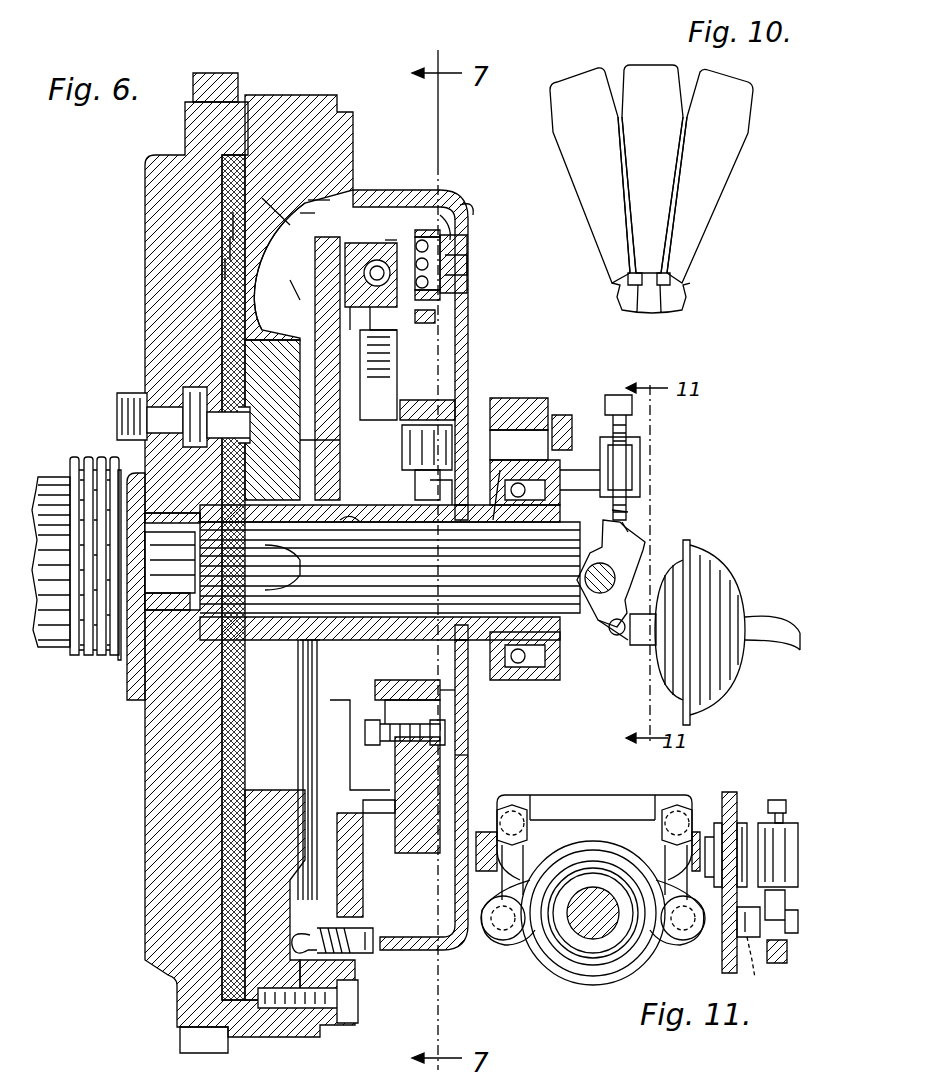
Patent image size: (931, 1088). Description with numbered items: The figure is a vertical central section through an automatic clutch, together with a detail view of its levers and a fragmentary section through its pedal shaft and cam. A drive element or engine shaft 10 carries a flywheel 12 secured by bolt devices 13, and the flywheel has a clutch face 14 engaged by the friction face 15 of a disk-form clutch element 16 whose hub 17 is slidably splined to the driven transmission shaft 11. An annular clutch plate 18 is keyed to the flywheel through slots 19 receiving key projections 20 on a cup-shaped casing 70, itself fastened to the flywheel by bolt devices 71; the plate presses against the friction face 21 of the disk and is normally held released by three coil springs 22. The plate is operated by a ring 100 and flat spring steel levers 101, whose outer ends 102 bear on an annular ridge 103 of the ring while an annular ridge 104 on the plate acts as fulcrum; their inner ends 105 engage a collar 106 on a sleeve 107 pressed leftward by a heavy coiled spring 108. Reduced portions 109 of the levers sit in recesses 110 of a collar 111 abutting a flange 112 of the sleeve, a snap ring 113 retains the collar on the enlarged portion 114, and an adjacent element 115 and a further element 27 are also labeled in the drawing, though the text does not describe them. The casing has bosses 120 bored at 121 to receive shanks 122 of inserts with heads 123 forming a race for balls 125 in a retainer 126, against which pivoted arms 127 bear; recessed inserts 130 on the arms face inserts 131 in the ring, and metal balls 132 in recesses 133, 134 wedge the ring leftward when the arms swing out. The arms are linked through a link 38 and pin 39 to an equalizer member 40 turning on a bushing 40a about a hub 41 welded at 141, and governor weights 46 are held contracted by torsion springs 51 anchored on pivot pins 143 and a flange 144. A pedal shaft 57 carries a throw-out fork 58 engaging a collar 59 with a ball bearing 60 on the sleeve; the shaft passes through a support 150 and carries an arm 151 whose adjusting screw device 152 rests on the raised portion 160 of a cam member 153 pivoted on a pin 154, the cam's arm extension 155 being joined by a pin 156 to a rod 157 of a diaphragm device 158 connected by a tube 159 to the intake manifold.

In FIG. 6, the drive element or engine shaft 10 is at (58, 640).
In FIG. 6, the driven element or transmission shaft 11 is at (390, 567).
In FIG. 11, the driven element or transmission shaft 11 is at (585, 923).
In FIG. 6, the flywheel 12 is at (160, 298).
In FIG. 6, the bolt devices 13 is at (160, 410).
In FIG. 6, the clutch face 14 is at (228, 258).
In FIG. 6, the friction face 15 is at (230, 237).
In FIG. 6, the clutch element 16 is at (233, 212).
In FIG. 6, the hub 17 is at (190, 640).
In FIG. 6, the clutch element 18 is at (262, 198).
In FIG. 6, the slots 19 is at (292, 165).
In FIG. 6, the key projections 20 is at (308, 200).
In FIG. 6, the friction face 21 is at (247, 313).
In FIG. 6, the coil springs 22 is at (353, 947).
In FIG. 6, the pressure plate 27 is at (447, 720).
In FIG. 6, the link 38 is at (422, 363).
In FIG. 6, the pin 39 is at (495, 520).
In FIG. 6, the equalizer member 40 is at (472, 500).
In FIG. 6, the bushing 40a is at (398, 717).
In FIG. 6, the hub 41 is at (400, 707).
In FIG. 6, the governor weights 46 is at (457, 760).
In FIG. 6, the coiled torsion spring 51 is at (378, 748).
In FIG. 6, the clutch pedal shaft 57 is at (545, 453).
In FIG. 11, the clutch pedal shaft 57 is at (485, 835).
In FIG. 6, the throw-out fork 58 is at (538, 397).
In FIG. 11, the throw-out fork 58 is at (590, 805).
In FIG. 6, the collar or ring 59 is at (525, 677).
In FIG. 11, the collar or ring 59 is at (652, 950).
In FIG. 6, the ball bearing journal mounting 60 is at (503, 660).
In FIG. 11, the ball bearing journal mounting 60 is at (592, 968).
In FIG. 6, the cup-shaped casing 70 is at (458, 213).
In FIG. 6, the bolt devices 71 is at (353, 1000).
In FIG. 6, the ring 100 is at (352, 240).
In FIG. 6, the fingers or levers 101 is at (387, 343).
In FIG. 10, the fingers or levers 101 is at (698, 170).
In FIG. 6, the outer ends 102 is at (397, 382).
In FIG. 10, the outer ends 102 is at (552, 95).
In FIG. 6, the annular ridge 103 is at (370, 243).
In FIG. 6, the annular ridge 104 is at (290, 280).
In FIG. 6, the inner ends 105 is at (305, 735).
In FIG. 10, the inner ends 105 is at (627, 297).
In FIG. 6, the collar 106 is at (318, 690).
In FIG. 6, the sleeve 107 is at (397, 640).
In FIG. 11, the sleeve 107 is at (613, 880).
In FIG. 6, the coiled spring 108 is at (432, 485).
In FIG. 10, the reduced portions 109 is at (606, 285).
In FIG. 6, the recesses 110 is at (330, 440).
In FIG. 6, the collar 111 is at (200, 547).
In FIG. 6, the flange 112 is at (300, 660).
In FIG. 6, the snap ring 113 is at (307, 637).
In FIG. 6, the enlarged portion 114 is at (357, 520).
In FIG. 6, the lever 115 is at (388, 787).
In FIG. 6, the bosses 120 is at (425, 277).
In FIG. 6, the bore 121 is at (440, 233).
In FIG. 6, the shanks 122 is at (455, 250).
In FIG. 6, the heads 123 is at (455, 266).
In FIG. 6, the balls 125 is at (445, 296).
In FIG. 6, the retainer 126 is at (425, 235).
In FIG. 6, the arms 127 is at (473, 190).
In FIG. 6, the recessed inserts 130 is at (385, 262).
In FIG. 6, the inserts 131 is at (365, 267).
In FIG. 6, the metal balls 132 is at (390, 240).
In FIG. 6, the recess 133 is at (435, 317).
In FIG. 6, the recess 134 is at (392, 320).
In FIG. 6, the welding 141 is at (455, 688).
In FIG. 6, the pivot pin 143 is at (445, 735).
In FIG. 6, the flange 144 is at (375, 802).
In FIG. 11, the support 150 is at (730, 800).
In FIG. 6, the arm 151 is at (596, 460).
In FIG. 11, the arm 151 is at (760, 825).
In FIG. 6, the adjusting screw device 152 is at (628, 425).
In FIG. 11, the adjusting screw device 152 is at (800, 790).
In FIG. 6, the cam member 153 is at (633, 547).
In FIG. 11, the cam member 153 is at (775, 912).
In FIG. 6, the pin 154 is at (603, 593).
In FIG. 11, the pin 154 is at (757, 965).
In FIG. 6, the arm extension 155 is at (615, 643).
In FIG. 6, the pin 156 is at (618, 635).
In FIG. 6, the rod 157 is at (643, 617).
In FIG. 11, the rod 157 is at (777, 963).
In FIG. 6, the compressible diaphragm device 158 is at (708, 562).
In FIG. 6, the tube 159 is at (757, 637).
In FIG. 6, the raised portion 160 is at (635, 527).